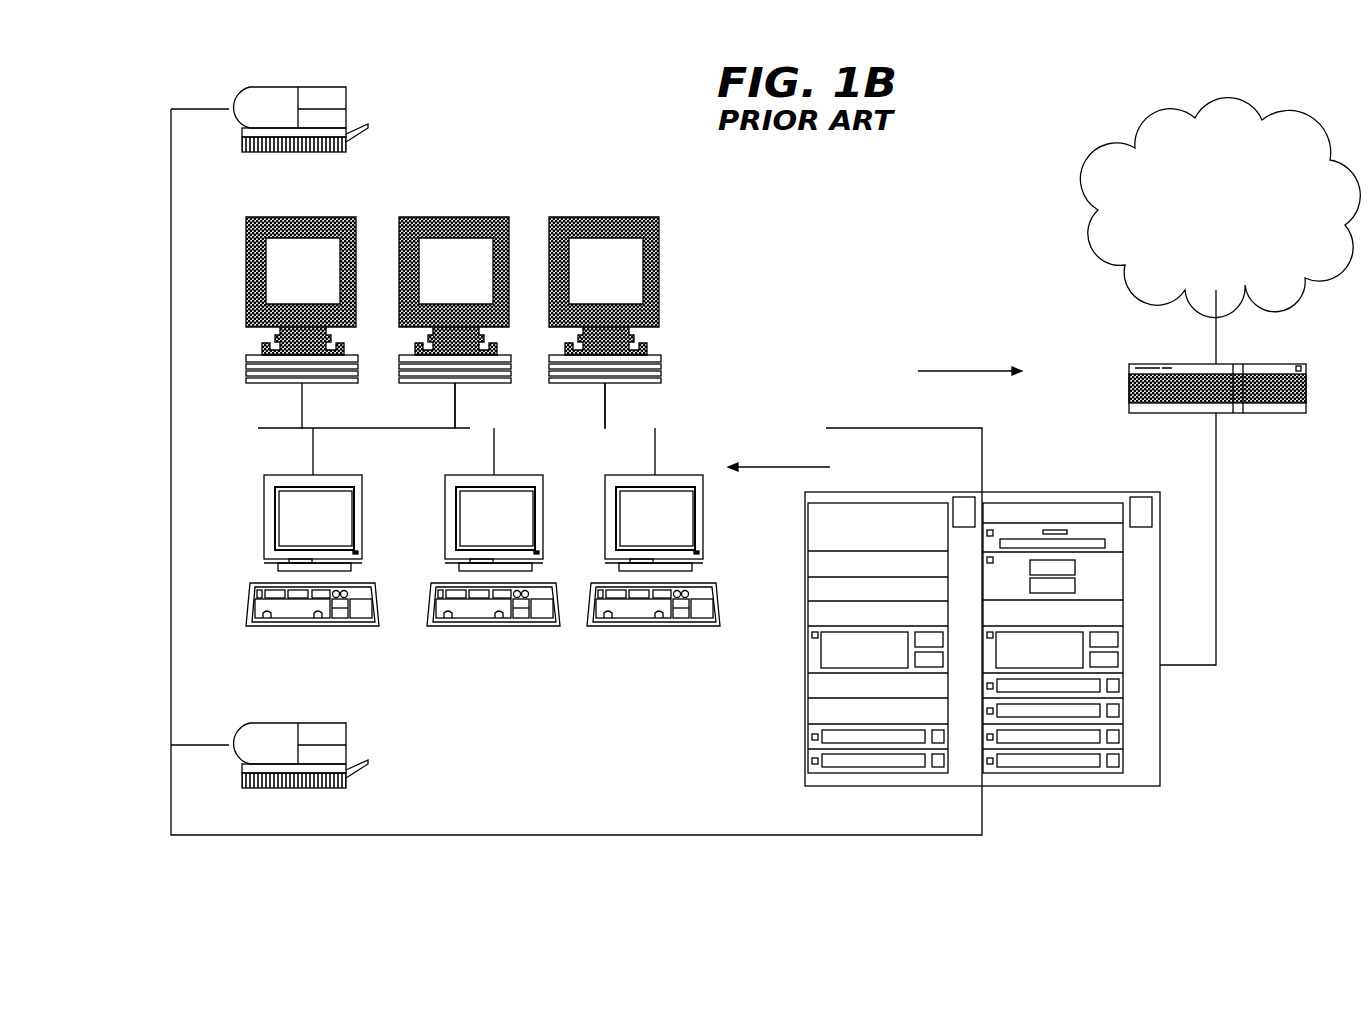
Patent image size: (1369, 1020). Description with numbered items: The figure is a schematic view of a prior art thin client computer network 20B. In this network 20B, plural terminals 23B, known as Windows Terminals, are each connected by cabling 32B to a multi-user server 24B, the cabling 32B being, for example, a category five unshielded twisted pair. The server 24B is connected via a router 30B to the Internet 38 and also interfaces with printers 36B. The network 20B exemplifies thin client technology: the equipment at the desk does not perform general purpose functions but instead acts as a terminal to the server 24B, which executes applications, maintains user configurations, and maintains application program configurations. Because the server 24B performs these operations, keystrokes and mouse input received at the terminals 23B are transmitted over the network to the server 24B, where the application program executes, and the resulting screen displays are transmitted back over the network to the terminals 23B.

The network 20B is at (977, 246).
The terminals 23B is at (723, 475).
The multi-user server 24B is at (1160, 723).
The router 30B is at (1253, 366).
The cabling 32B is at (933, 428).
The printers 36B is at (346, 96).
The Internet 38 is at (1305, 274).